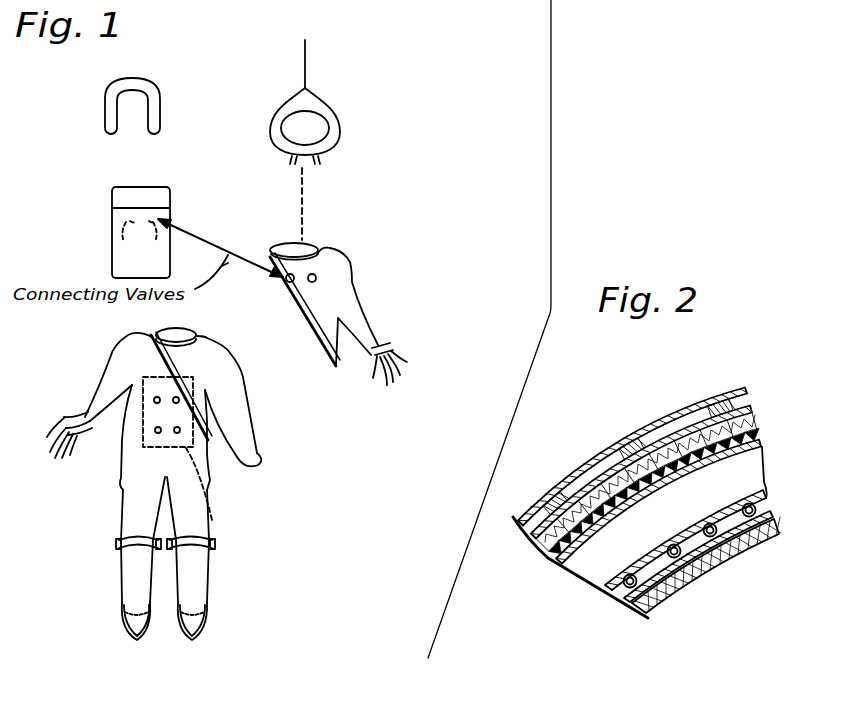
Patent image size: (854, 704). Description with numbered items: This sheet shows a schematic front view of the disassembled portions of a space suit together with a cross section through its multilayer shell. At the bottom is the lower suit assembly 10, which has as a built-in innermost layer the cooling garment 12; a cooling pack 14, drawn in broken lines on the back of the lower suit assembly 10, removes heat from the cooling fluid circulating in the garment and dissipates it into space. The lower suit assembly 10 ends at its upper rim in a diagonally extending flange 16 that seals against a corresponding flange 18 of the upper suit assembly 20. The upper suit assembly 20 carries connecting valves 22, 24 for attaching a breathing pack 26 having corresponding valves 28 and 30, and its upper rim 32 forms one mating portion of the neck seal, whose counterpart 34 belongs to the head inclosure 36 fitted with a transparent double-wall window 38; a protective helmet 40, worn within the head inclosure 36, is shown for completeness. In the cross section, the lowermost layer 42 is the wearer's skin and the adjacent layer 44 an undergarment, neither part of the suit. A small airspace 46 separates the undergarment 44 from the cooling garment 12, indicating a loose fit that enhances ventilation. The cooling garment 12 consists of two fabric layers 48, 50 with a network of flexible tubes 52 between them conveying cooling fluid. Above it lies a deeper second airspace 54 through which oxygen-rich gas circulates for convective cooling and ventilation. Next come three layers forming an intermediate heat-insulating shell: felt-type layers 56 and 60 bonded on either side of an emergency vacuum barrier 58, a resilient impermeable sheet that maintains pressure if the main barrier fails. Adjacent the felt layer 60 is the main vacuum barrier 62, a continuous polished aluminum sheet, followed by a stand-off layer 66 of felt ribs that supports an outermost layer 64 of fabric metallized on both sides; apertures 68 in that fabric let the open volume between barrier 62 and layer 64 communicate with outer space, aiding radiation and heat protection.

In FIG. 1, the lower suit assembly 10 is at (229, 506).
In FIG. 1, the cooling garment 12 is at (242, 476).
In FIG. 2, the cooling garment 12 is at (779, 516).
In FIG. 1, the cooling pack 14 is at (199, 486).
In FIG. 1, the diagonally extending flange 16 is at (321, 360).
In FIG. 1, the flange 18 is at (306, 323).
In FIG. 1, the upper suit assembly 20 is at (385, 271).
In FIG. 1, the connecting valve 22 is at (288, 282).
In FIG. 1, the connecting valve 24 is at (315, 278).
In FIG. 1, the breathing pack 26 is at (160, 215).
In FIG. 1, the valve 28 is at (108, 245).
In FIG. 1, the valve 30 is at (155, 243).
In FIG. 1, the upper rim 32 is at (326, 158).
In FIG. 1, the neck seal counterpart 34 is at (292, 153).
In FIG. 1, the head inclosure 36 is at (362, 140).
In FIG. 1, the transparent double-wall window 38 is at (318, 128).
In FIG. 1, the protective helmet 40 is at (140, 78).
In FIG. 2, the skin of the wearer 42 is at (779, 538).
In FIG. 2, the undergarment 44 is at (772, 523).
In FIG. 2, the airspace 46 is at (635, 610).
In FIG. 2, the cooling garment layer 48 is at (624, 600).
In FIG. 2, the cooling garment layer 50 is at (603, 584).
In FIG. 2, the flexible tubes 52 is at (678, 558).
In FIG. 2, the second airspace 54 is at (666, 518).
In FIG. 2, the felt-type insulating layer 56 is at (766, 444).
In FIG. 2, the emergency vacuum barrier 58 is at (768, 434).
In FIG. 2, the felt-type insulating layer 60 is at (758, 423).
In FIG. 2, the main vacuum barrier 62 is at (753, 409).
In FIG. 2, the outermost layer 64 is at (697, 403).
In FIG. 2, the stand-off layer 66 is at (560, 494).
In FIG. 2, the apertures 68 is at (673, 415).